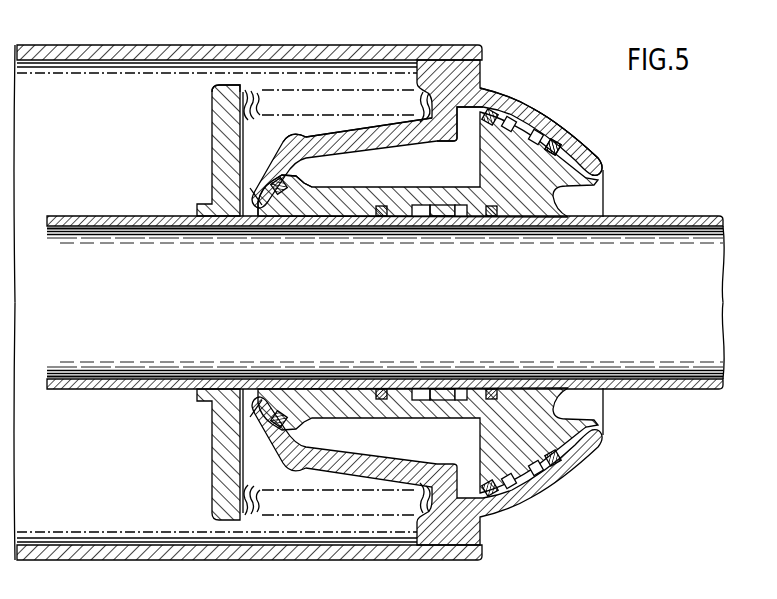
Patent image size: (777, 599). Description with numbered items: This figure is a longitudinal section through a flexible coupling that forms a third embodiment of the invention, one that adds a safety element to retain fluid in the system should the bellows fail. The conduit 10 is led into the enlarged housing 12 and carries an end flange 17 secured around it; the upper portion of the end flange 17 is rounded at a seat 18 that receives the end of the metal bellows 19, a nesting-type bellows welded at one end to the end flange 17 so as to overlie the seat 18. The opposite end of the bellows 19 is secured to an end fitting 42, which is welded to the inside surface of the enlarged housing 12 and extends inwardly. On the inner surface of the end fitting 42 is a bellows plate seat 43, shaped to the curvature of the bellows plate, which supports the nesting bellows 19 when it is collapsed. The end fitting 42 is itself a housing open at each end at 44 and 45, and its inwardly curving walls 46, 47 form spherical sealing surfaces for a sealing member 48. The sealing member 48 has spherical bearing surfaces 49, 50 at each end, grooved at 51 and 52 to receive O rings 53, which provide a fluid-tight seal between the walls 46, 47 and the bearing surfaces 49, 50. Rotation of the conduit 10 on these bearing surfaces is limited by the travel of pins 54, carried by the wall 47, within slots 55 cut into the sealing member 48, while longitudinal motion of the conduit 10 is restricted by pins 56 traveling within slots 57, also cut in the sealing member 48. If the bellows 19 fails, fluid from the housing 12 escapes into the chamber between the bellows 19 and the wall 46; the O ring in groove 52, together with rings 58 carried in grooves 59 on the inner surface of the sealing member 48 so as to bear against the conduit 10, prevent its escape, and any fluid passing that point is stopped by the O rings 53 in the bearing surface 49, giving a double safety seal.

The conduit 10 is at (683, 214).
The enlarged housing 12 is at (462, 44).
The end flange 17 is at (216, 150).
The seat 18 is at (240, 99).
The metal bellows 19 is at (292, 114).
The end fitting 42 is at (462, 78).
The bellows plate seat 43 is at (456, 136).
The open end 44 is at (253, 196).
The open end 45 is at (603, 176).
The inwardly curving wall 46 is at (565, 136).
The inwardly curving wall 47 is at (292, 158).
The sealing member 48 is at (556, 190).
The spherical bearing surface 49 is at (577, 146).
The spherical bearing surface 50 is at (257, 217).
The groove 51 is at (589, 158).
The groove 52 is at (276, 217).
The O ring 53 is at (557, 140).
The pin 54 is at (528, 125).
The slot 55 is at (549, 130).
The pin 56 is at (446, 216).
The slot 57 is at (458, 216).
The ring 58 is at (382, 216).
The groove 59 is at (420, 216).